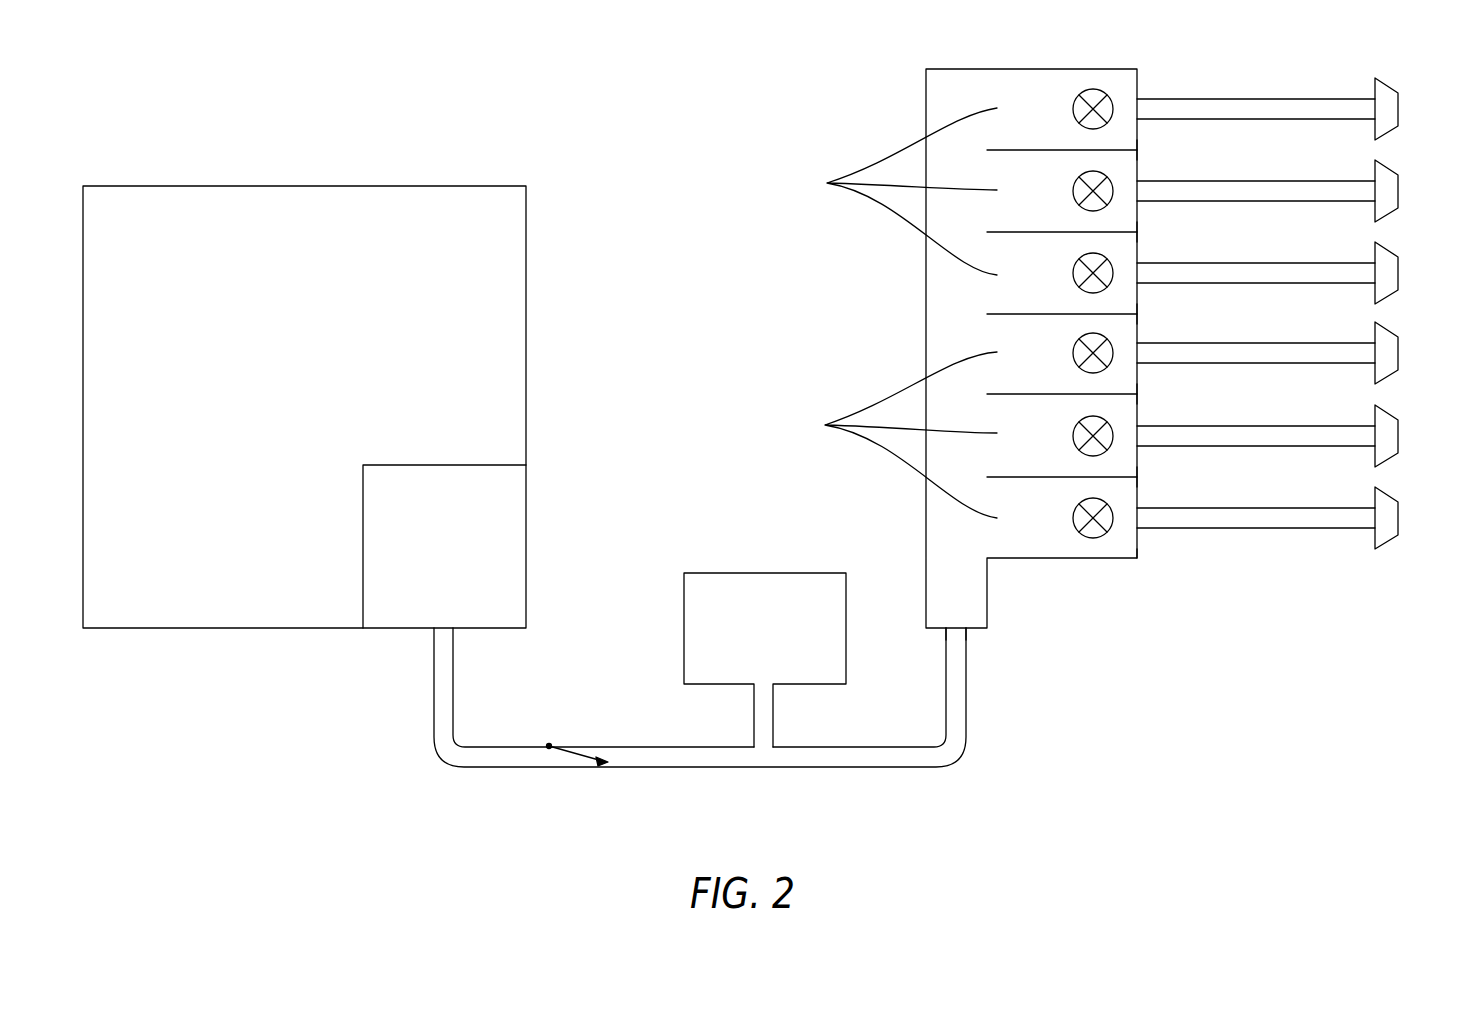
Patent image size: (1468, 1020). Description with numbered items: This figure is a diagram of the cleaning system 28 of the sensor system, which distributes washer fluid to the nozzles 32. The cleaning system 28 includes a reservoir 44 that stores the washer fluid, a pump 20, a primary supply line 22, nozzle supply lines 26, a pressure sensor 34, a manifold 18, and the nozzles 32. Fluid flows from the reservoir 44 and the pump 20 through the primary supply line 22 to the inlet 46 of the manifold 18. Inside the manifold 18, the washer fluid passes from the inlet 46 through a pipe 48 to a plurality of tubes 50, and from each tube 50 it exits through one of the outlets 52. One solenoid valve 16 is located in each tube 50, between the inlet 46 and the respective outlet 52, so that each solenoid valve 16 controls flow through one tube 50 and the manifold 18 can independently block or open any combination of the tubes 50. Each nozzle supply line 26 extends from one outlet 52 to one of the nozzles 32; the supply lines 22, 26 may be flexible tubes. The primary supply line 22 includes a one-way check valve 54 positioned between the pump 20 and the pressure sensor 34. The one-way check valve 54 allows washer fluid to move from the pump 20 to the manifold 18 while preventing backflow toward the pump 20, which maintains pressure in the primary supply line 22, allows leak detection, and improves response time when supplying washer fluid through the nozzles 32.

The solenoid valve 16 is at (1073, 273).
The manifold 18 is at (913, 91).
The pump 20 is at (527, 507).
The primary supply line 22 is at (434, 722).
The nozzle supply lines 26 is at (1275, 99).
The cleaning system 28 is at (511, 64).
The nozzles 32 is at (1400, 115).
The pressure sensor 34 is at (722, 572).
The reservoir 44 is at (156, 186).
The inlet 46 is at (977, 632).
The pipe 48 is at (926, 298).
The tubes 50 is at (896, 313).
The outlets 52 is at (1137, 133).
The one-way check valve 54 is at (573, 757).